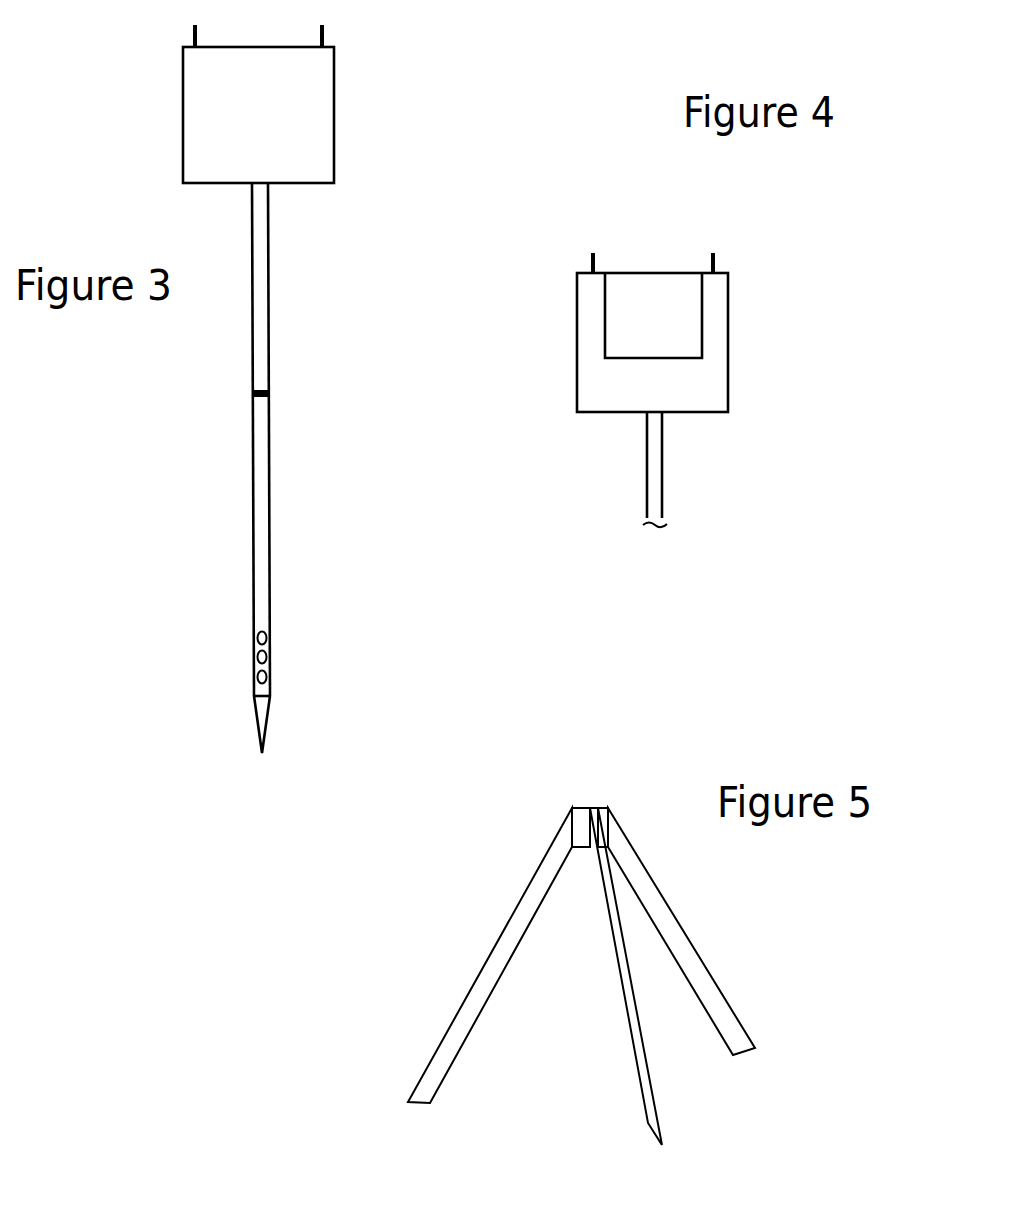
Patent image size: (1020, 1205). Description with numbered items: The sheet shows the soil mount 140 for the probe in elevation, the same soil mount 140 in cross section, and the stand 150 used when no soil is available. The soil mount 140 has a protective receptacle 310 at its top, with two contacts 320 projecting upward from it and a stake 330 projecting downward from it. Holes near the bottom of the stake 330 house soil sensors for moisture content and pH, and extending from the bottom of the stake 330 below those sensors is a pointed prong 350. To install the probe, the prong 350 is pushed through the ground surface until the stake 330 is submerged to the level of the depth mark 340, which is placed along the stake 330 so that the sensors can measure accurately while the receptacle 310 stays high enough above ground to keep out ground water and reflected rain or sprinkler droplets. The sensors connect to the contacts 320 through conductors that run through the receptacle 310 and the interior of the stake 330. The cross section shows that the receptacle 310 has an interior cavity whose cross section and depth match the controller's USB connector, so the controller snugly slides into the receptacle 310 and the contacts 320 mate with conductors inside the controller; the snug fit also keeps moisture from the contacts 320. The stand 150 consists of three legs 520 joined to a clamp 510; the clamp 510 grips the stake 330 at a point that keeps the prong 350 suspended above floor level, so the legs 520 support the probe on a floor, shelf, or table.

In FIG. 3, the protective receptacle 310 is at (170, 118).
In FIG. 4, the protective receptacle 310 is at (562, 343).
In FIG. 3, the contacts 320 is at (340, 33).
In FIG. 4, the contacts 320 is at (735, 255).
In FIG. 3, the stake 330 is at (285, 288).
In FIG. 4, the stake 330 is at (637, 482).
In FIG. 3, the depth mark 340 is at (285, 401).
In FIG. 3, the prong 350 is at (243, 726).
In FIG. 3, the soil mount 140 is at (185, 403).
In FIG. 5, the clamp 510 is at (582, 793).
In FIG. 5, the legs 520 is at (463, 978).
In FIG. 5, the stand 150 is at (712, 920).